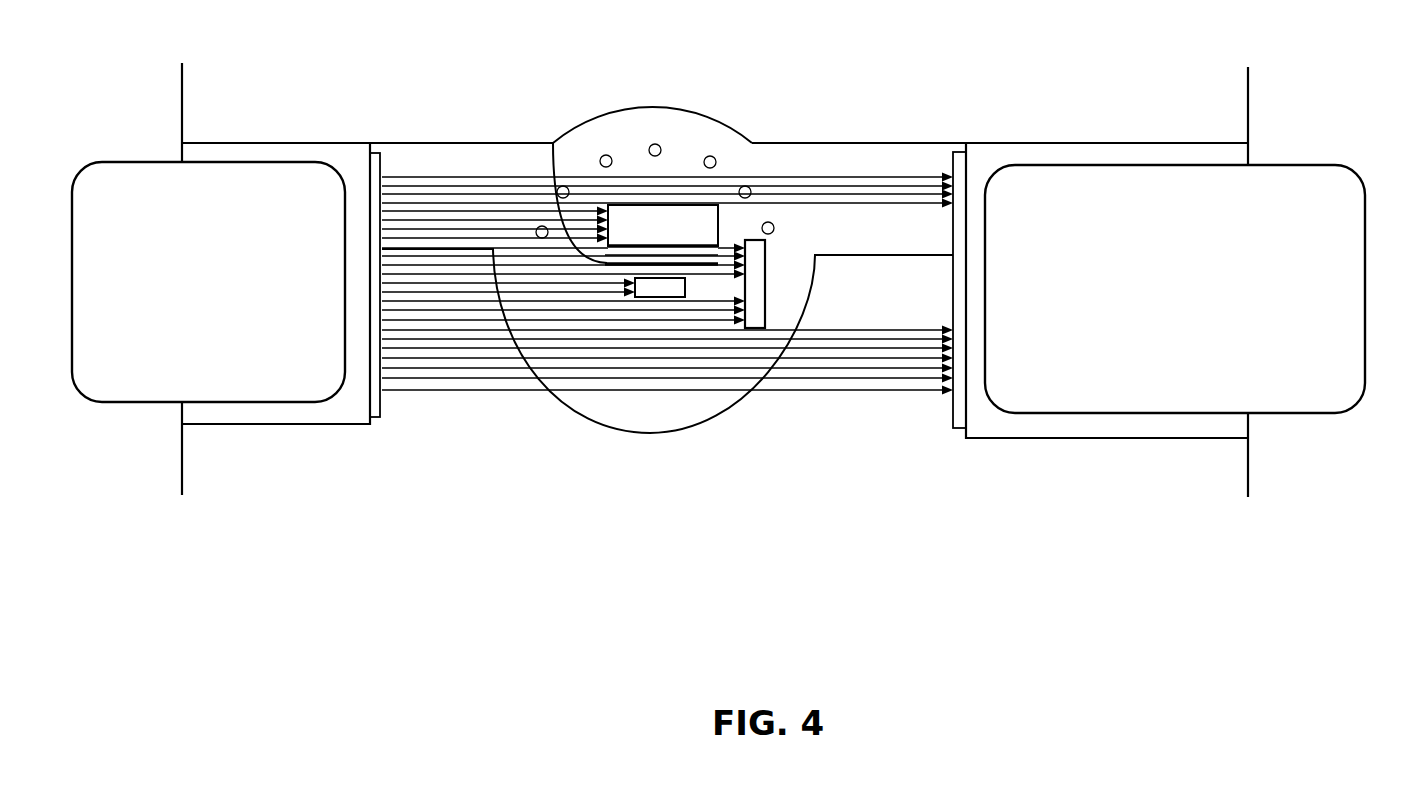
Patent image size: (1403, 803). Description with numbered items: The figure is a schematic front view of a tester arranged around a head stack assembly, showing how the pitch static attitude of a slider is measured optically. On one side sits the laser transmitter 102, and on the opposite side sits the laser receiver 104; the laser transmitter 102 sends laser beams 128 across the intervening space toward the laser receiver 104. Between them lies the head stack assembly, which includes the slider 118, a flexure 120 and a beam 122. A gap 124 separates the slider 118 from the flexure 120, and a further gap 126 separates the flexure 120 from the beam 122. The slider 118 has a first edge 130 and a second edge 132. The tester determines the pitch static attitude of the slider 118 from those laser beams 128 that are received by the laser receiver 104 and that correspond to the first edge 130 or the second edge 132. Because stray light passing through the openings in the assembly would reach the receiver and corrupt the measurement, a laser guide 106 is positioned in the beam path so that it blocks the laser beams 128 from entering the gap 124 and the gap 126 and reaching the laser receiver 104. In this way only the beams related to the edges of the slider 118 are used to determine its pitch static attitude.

The laser transmitter 102 is at (303, 180).
The laser receiver 104 is at (1068, 183).
The laser guide 106 is at (758, 298).
The slider 118 is at (667, 217).
The flexure 120 is at (553, 143).
The beam 122 is at (648, 292).
The gap 124 is at (740, 252).
The gap 126 is at (677, 270).
The laser beams 128 is at (507, 177).
The first edge 130 is at (717, 252).
The second edge 132 is at (608, 205).